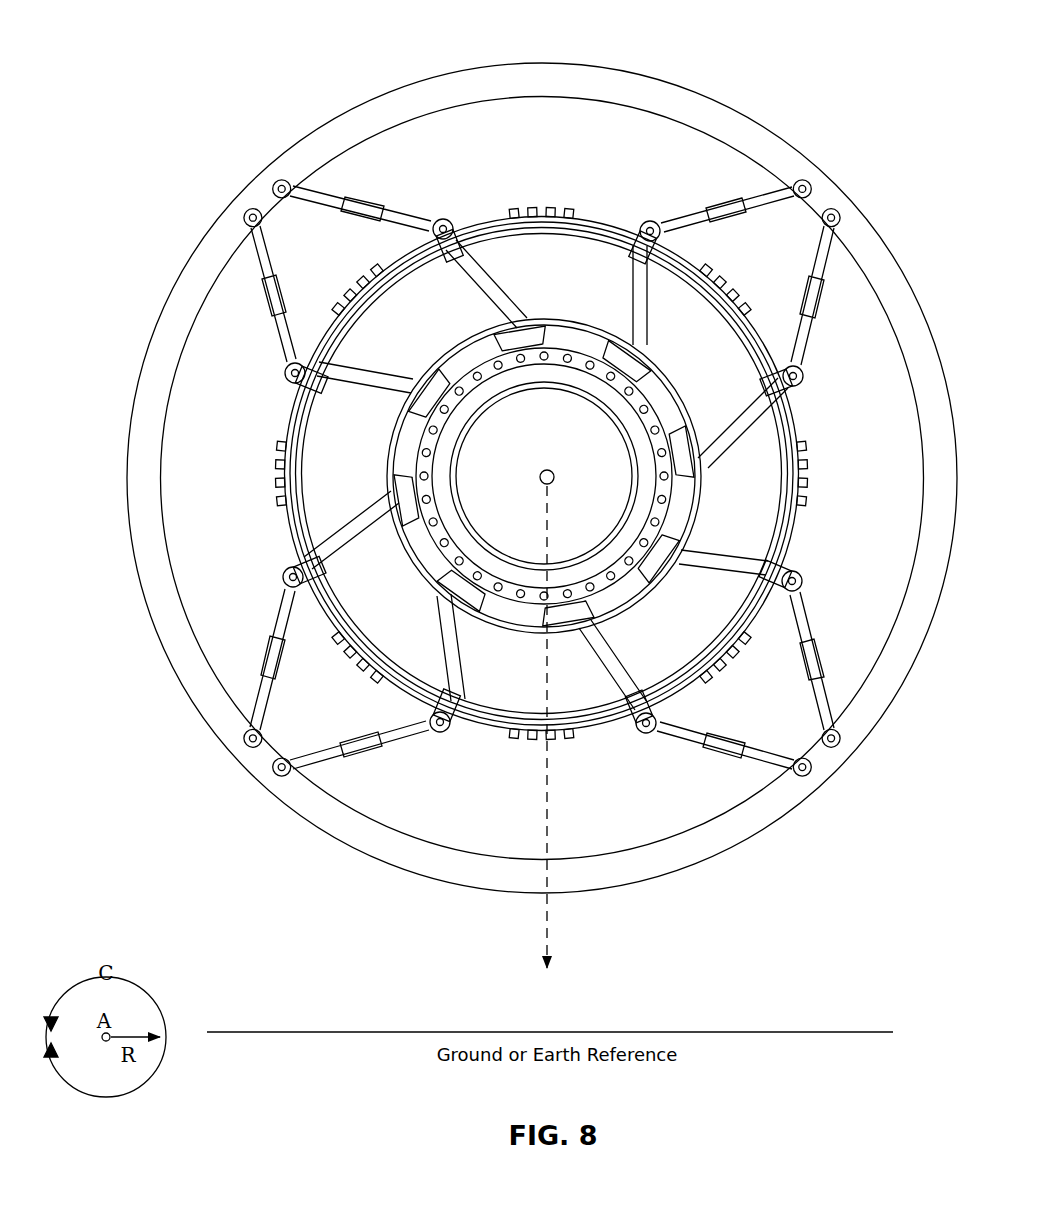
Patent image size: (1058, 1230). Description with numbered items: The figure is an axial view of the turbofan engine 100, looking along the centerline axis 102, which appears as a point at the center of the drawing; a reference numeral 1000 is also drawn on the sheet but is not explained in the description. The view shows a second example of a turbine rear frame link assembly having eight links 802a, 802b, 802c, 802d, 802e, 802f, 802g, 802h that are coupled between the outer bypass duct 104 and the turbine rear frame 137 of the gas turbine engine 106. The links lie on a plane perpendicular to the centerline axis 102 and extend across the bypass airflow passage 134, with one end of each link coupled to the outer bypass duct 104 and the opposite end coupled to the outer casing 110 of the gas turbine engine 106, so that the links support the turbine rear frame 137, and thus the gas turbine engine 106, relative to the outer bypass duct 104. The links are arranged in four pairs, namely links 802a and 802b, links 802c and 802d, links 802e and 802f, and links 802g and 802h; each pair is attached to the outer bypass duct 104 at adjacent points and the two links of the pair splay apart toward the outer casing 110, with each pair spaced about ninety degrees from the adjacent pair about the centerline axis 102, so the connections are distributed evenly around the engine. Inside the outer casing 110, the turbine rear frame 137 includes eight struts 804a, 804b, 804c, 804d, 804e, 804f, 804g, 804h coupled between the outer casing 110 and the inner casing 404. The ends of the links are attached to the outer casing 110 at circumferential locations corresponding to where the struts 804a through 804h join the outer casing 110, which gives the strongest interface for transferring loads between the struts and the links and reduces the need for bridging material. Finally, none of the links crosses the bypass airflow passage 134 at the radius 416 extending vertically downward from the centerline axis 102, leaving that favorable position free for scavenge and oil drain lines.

The turbofan engine 100 is at (236, 104).
The mounting system 1000 is at (178, 216).
The centerline axis 102 is at (554, 475).
The outer bypass duct 104 is at (585, 82).
The gas turbine engine 106 is at (546, 184).
The outer casing 110 is at (280, 470).
The bypass airflow passage 134 is at (632, 136).
The turbine rear frame 137 is at (483, 178).
The inner casing 404 is at (403, 455).
The radius 416 is at (548, 747).
The link 802a is at (275, 312).
The link 802b is at (377, 204).
The link 802c is at (706, 199).
The link 802d is at (812, 305).
The link 802e is at (803, 638).
The link 802f is at (625, 735).
The link 802g is at (395, 737).
The link 802h is at (275, 660).
The strut 804a is at (378, 371).
The strut 804b is at (482, 268).
The strut 804c is at (652, 288).
The strut 804d is at (750, 440).
The strut 804e is at (728, 562).
The strut 804f is at (618, 650).
The strut 804g is at (458, 652).
The strut 804h is at (378, 497).